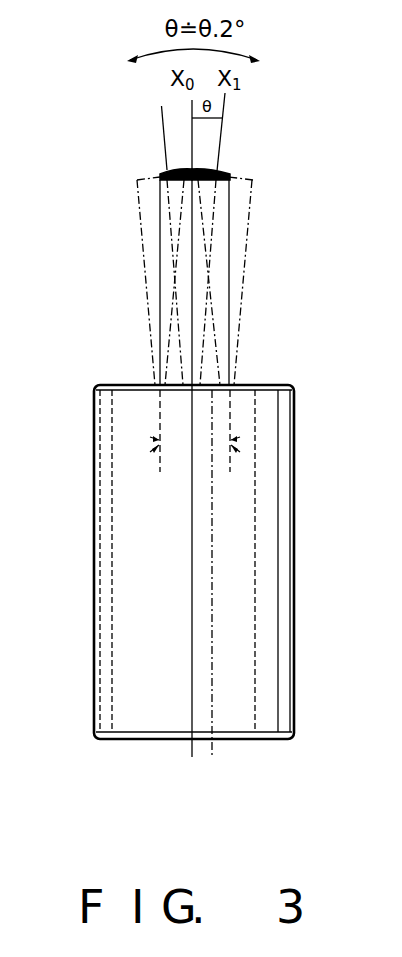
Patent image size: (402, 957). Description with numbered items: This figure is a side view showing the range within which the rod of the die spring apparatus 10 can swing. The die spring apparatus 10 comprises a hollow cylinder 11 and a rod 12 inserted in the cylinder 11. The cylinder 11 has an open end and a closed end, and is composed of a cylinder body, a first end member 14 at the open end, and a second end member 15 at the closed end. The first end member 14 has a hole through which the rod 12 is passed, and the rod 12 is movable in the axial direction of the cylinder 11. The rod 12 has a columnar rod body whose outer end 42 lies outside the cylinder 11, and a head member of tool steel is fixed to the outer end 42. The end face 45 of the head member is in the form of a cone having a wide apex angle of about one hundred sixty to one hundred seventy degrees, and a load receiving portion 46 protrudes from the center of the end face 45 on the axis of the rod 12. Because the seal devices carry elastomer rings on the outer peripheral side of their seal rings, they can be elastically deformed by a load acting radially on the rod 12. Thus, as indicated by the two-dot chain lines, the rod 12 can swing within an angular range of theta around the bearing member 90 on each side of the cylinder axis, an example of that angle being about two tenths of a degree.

The die spring apparatus 10 is at (275, 361).
The hollow cylinder 11 is at (294, 495).
The rod 12 is at (229, 265).
The first end member 14 is at (110, 385).
The second end member 15 is at (147, 740).
The outer end 42 is at (221, 208).
The end face 45 is at (191, 171).
The load receiving portion 46 is at (193, 171).
The bearing member 90 is at (151, 438).